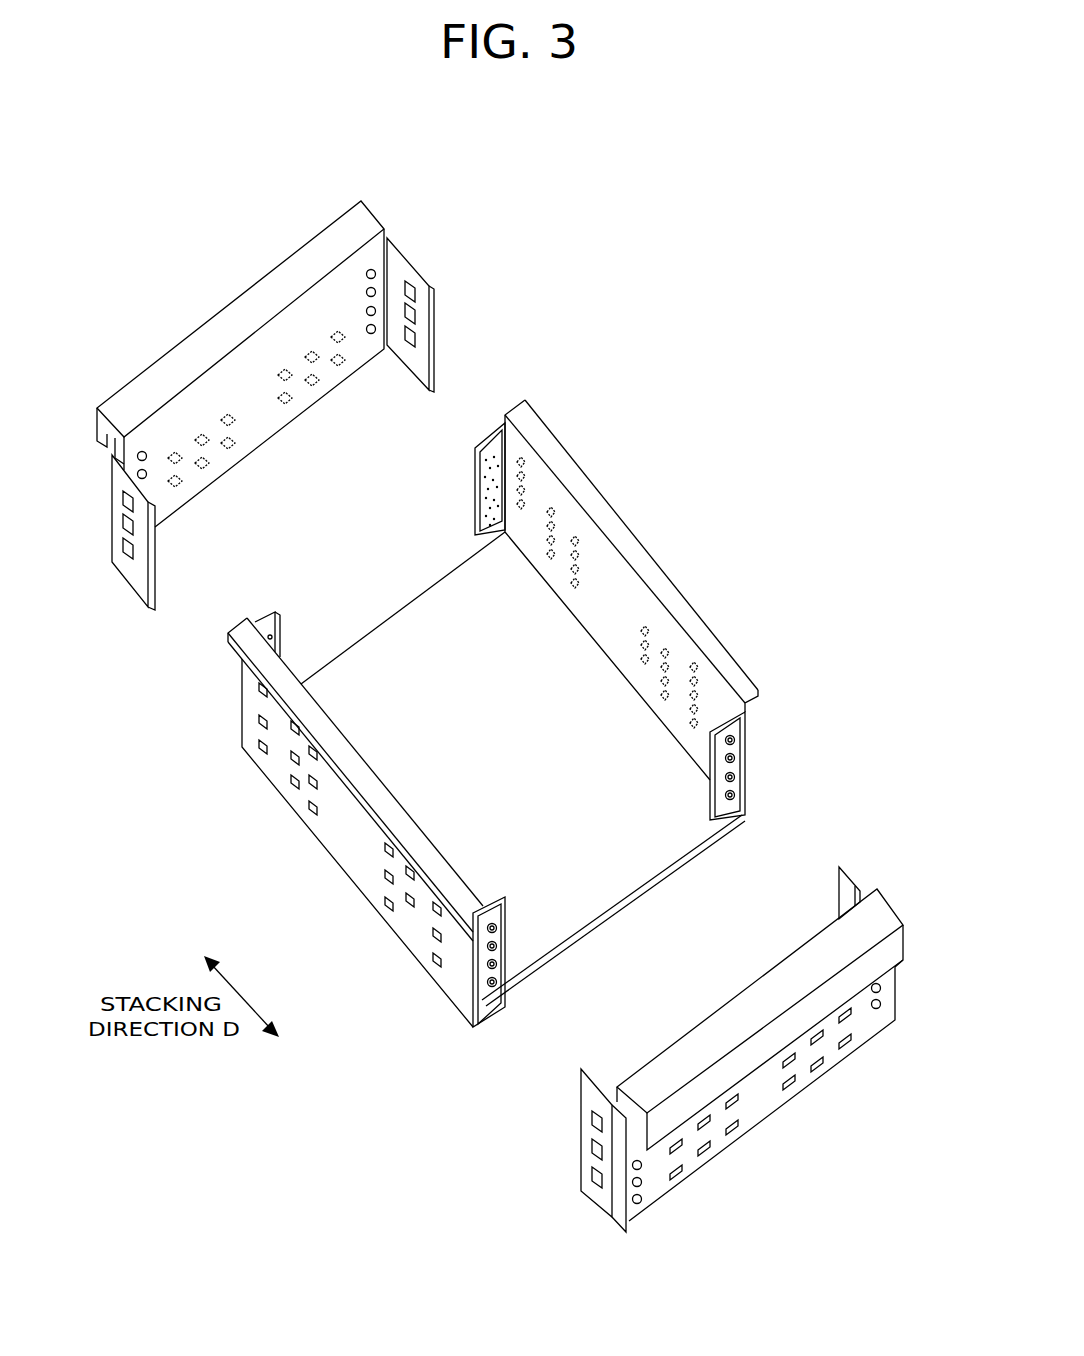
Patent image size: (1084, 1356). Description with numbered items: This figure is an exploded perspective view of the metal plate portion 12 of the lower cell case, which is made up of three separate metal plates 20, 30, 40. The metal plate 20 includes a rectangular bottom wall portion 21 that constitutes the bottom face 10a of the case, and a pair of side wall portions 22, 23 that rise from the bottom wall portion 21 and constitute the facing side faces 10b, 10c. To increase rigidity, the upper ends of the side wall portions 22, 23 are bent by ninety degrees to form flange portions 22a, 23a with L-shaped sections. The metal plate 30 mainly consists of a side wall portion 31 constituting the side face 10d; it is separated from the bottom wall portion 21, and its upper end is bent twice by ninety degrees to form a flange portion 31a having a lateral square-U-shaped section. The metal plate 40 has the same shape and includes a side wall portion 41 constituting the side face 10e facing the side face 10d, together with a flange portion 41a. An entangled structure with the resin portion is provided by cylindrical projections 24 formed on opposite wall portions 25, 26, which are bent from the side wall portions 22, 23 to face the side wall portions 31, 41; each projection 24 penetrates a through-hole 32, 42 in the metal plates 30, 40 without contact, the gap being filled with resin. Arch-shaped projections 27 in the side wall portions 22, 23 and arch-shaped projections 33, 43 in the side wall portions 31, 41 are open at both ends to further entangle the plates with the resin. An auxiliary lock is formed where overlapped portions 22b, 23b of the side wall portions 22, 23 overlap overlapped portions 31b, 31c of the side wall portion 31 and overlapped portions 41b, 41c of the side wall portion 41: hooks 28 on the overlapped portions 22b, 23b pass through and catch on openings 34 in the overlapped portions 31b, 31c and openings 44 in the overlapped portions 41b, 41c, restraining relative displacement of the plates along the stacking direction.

The metal plate portion 12 is at (771, 291).
The metal plate 20 is at (674, 499).
The bottom wall portion 21 is at (432, 636).
The side wall portion 22 is at (340, 832).
The flange portion 22a is at (253, 634).
The overlapped portion 22b is at (250, 697).
The side wall portion 23 is at (607, 596).
The flange portion 23a is at (528, 397).
The overlapped portion 23b is at (540, 420).
The projection 24 is at (476, 486).
The opposite wall portion 25 is at (738, 740).
The opposite wall portion 26 is at (478, 444).
The projection 27 is at (554, 494).
The hook 28 is at (526, 462).
The metal plate 30 is at (870, 837).
The side wall portion 31 is at (762, 1110).
The flange portion 31a is at (880, 920).
The overlapped portion 31b is at (579, 1196).
The overlapped portion 31c is at (842, 866).
The through-hole 32 is at (876, 1012).
The projection 33 is at (826, 1100).
The opening 34 is at (838, 899).
The metal plate 40 is at (332, 170).
The side wall portion 41 is at (258, 416).
The flange portion 41a is at (368, 215).
The overlapped portion 41b is at (133, 586).
The overlapped portion 41c is at (432, 370).
The through-hole 42 is at (371, 336).
The projection 43 is at (332, 414).
The opening 44 is at (410, 273).
The bottom face 10a is at (523, 764).
The side face 10b is at (312, 854).
The side face 10c is at (662, 560).
The side face 10d is at (731, 1065).
The side face 10e is at (276, 424).